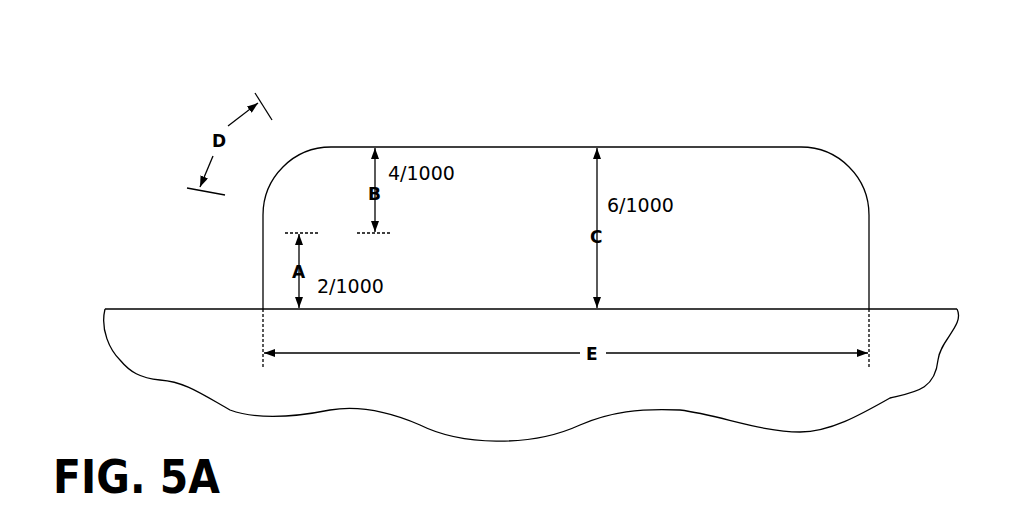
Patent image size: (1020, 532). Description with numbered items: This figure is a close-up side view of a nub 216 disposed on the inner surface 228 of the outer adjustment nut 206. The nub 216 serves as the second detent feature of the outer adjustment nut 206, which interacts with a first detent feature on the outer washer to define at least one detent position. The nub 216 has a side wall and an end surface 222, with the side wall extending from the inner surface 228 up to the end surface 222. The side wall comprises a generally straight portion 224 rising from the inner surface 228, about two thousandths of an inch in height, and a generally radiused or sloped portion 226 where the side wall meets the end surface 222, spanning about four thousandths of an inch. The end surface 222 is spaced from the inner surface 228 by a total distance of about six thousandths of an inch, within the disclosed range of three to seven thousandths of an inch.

The outer adjustment nut 206 is at (505, 321).
The nub 216 is at (543, 157).
The end surface 222 is at (846, 161).
The generally straight portion 224 is at (254, 273).
The generally radiused or sloped portion 226 is at (284, 165).
The inner surface 228 is at (204, 307).